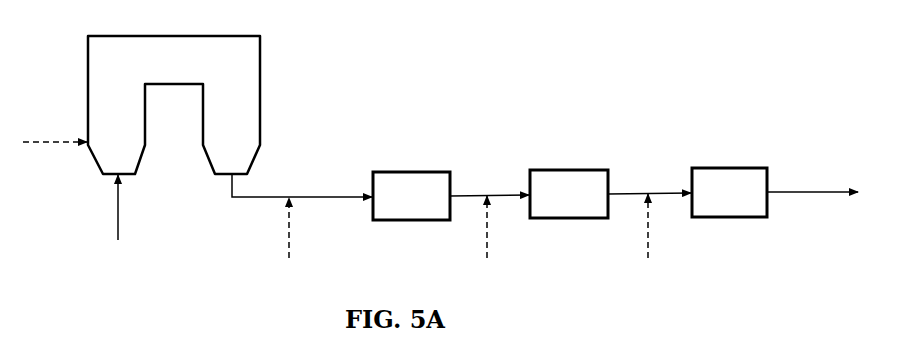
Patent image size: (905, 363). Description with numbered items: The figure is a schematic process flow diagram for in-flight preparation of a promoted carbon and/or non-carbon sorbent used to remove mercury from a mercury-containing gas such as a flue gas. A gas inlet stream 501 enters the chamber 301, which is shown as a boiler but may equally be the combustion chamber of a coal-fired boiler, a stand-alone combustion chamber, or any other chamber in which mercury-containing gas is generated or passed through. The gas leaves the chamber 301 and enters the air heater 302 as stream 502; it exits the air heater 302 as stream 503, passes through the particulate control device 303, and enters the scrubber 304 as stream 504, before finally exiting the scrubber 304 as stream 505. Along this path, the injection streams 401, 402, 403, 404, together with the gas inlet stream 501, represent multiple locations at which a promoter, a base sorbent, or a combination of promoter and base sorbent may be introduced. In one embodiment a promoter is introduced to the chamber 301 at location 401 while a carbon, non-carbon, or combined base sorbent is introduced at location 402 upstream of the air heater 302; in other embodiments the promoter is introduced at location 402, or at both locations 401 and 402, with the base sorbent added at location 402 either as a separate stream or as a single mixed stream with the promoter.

The chamber 301 is at (148, 76).
The air heater 302 is at (387, 210).
The particulate control device 303 is at (546, 208).
The scrubber 304 is at (706, 206).
The injection stream 401 is at (50, 127).
The injection stream 402 is at (261, 228).
The injection stream 403 is at (459, 227).
The injection stream 404 is at (620, 226).
The gas inlet stream 501 is at (92, 207).
The stream 502 is at (302, 182).
The stream 503 is at (489, 181).
The stream 504 is at (649, 179).
The stream 505 is at (812, 178).